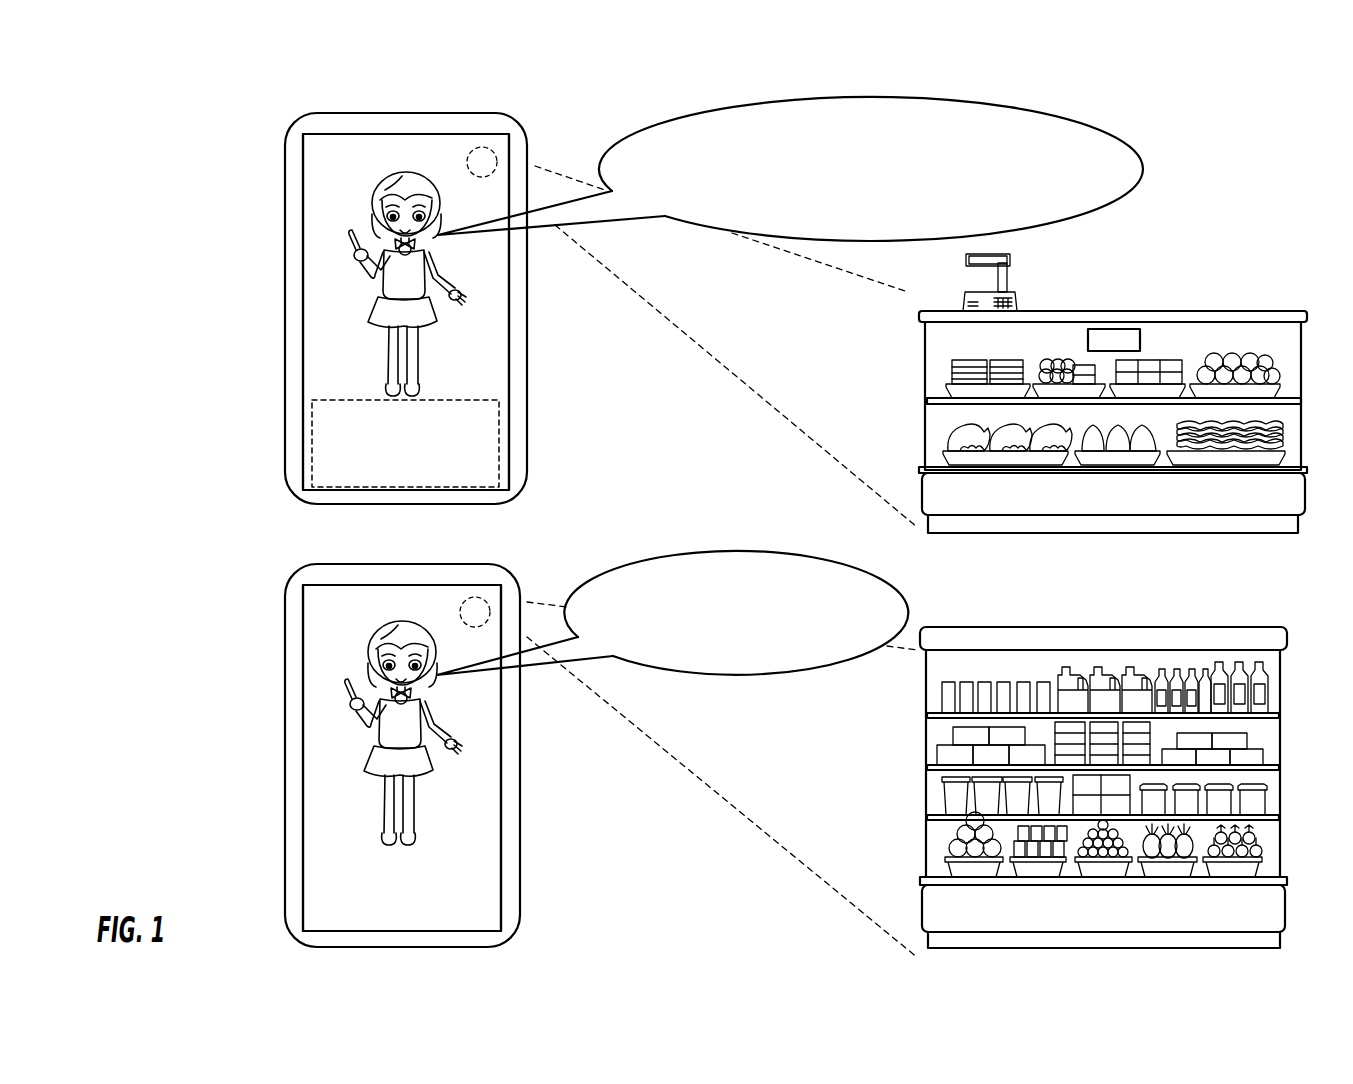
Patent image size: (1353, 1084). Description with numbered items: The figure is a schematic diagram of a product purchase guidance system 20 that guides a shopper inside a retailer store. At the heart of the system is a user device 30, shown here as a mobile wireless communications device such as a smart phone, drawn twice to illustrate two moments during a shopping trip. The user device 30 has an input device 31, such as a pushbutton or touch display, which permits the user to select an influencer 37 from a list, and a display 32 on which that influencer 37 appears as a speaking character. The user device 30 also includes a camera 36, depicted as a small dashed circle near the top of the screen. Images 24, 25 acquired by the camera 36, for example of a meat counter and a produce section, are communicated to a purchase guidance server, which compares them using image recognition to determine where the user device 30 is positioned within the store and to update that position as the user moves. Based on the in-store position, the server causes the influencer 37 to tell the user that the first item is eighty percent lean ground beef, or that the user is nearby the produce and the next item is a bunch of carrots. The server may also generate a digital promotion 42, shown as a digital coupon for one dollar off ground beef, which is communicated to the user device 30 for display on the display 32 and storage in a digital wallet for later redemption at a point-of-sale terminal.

The product purchase guidance system 20 is at (604, 100).
The image 24 is at (1245, 311).
The image 25 is at (1243, 626).
The user device 30 is at (285, 419).
The input device 31 is at (487, 368).
The display 32 is at (303, 330).
The camera 36 is at (490, 150).
The influencer 37 is at (375, 208).
The digital promotion 42 is at (500, 441).